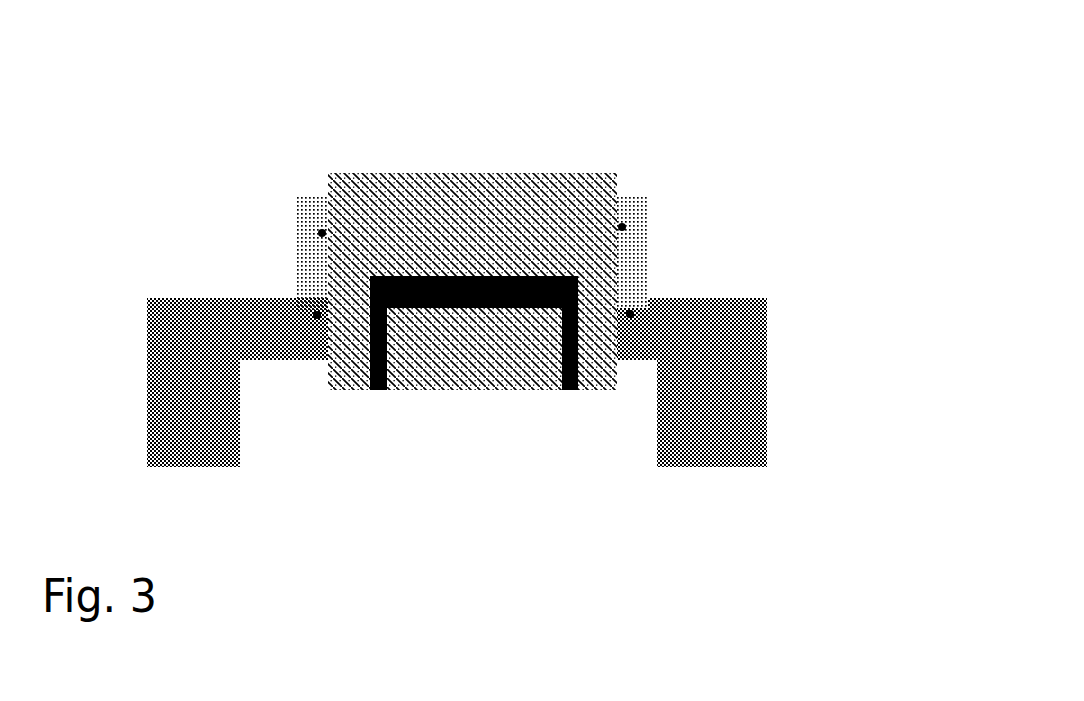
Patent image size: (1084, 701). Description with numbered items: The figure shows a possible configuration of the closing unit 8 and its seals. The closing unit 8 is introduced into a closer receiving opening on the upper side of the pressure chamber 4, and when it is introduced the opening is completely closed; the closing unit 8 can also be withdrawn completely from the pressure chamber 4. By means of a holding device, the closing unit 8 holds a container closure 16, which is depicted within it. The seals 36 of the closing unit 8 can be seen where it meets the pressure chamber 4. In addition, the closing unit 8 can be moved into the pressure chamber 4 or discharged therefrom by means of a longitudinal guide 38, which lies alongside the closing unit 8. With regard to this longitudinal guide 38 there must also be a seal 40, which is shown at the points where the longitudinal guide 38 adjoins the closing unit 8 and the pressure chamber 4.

The pressure chamber 4 is at (240, 402).
The closing unit 8 is at (432, 205).
The container closure 16 is at (563, 330).
The seals 36 is at (630, 313).
The longitudinal guide 38 is at (635, 257).
The seal 40 is at (622, 230).